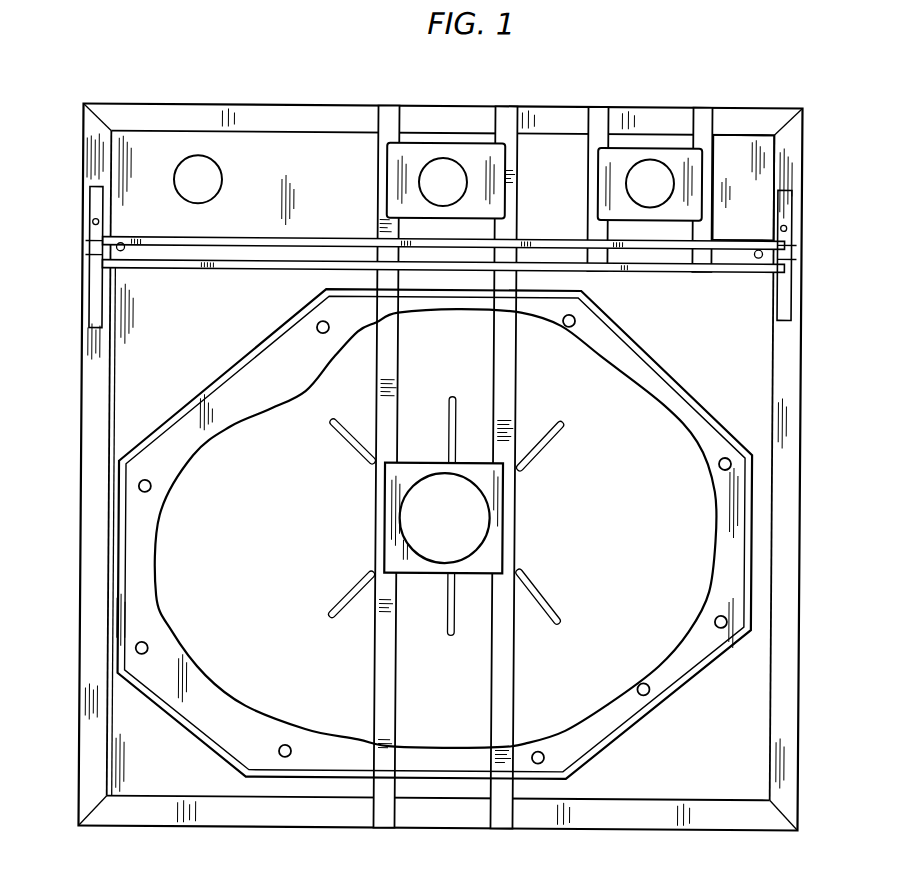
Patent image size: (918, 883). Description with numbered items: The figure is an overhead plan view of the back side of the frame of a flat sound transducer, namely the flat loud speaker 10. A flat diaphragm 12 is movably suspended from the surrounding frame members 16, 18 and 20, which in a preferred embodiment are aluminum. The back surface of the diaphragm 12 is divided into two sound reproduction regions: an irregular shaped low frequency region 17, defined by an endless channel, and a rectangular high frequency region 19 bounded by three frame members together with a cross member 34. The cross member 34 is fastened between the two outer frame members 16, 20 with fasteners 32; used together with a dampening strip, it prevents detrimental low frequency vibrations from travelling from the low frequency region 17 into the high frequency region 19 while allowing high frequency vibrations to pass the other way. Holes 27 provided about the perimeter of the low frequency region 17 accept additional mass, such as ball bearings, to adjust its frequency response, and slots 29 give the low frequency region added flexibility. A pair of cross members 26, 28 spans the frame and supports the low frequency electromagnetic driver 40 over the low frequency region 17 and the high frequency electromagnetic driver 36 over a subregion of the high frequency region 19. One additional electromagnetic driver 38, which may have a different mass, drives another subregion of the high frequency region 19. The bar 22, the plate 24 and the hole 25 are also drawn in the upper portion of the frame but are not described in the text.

The flat loud speaker 10 is at (609, 78).
The flat diaphragm 12 is at (728, 545).
The frame member 16 is at (789, 470).
The low frequency region 17 is at (668, 633).
The frame member 18 is at (265, 812).
The high frequency region 19 is at (283, 150).
The frame member 20 is at (88, 650).
The vertical bar 22 is at (591, 142).
The side plate 24 is at (730, 132).
The hole 25 is at (196, 156).
The cross member 26 is at (383, 365).
The holes 27 is at (725, 455).
The cross member 28 is at (505, 376).
The slots 29 is at (450, 394).
The fasteners 32 is at (94, 248).
The cross member 34 is at (212, 263).
The high frequency electromagnetic driver 36 is at (468, 150).
The additional electromagnetic driver 38 is at (668, 153).
The low frequency electromagnetic driver 40 is at (493, 548).